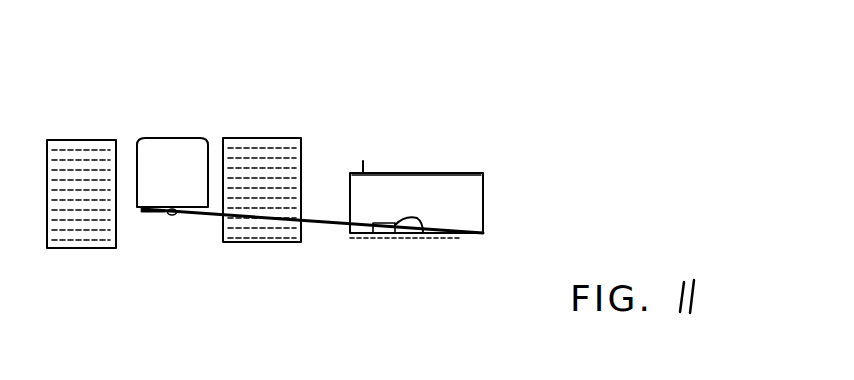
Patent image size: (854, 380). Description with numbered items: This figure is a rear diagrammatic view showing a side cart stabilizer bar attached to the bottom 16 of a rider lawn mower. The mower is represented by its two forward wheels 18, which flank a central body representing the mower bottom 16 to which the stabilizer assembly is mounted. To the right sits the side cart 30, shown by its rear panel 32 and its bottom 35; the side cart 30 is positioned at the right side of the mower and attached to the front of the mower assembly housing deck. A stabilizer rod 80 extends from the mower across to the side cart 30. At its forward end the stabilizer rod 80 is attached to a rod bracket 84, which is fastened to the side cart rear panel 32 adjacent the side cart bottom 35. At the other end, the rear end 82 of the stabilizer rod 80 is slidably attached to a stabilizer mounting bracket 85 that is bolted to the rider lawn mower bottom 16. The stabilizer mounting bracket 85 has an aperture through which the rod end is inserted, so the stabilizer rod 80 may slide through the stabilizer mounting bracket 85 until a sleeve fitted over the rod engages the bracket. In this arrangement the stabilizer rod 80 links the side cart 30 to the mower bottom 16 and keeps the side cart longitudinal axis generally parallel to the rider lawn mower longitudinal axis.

The forward wheels 18 is at (82, 140).
The bottom 16 is at (138, 210).
The rear end 82 is at (153, 220).
The stabilizer mounting bracket 85 is at (170, 214).
The stabilizer rod 80 is at (330, 228).
The side cart 30 is at (465, 180).
The rear panel 32 is at (465, 207).
The rod bracket 84 is at (423, 233).
The bottom 35 is at (470, 240).